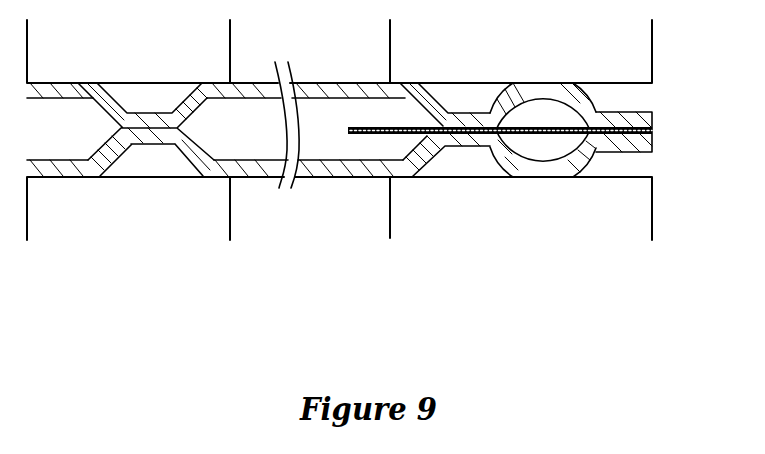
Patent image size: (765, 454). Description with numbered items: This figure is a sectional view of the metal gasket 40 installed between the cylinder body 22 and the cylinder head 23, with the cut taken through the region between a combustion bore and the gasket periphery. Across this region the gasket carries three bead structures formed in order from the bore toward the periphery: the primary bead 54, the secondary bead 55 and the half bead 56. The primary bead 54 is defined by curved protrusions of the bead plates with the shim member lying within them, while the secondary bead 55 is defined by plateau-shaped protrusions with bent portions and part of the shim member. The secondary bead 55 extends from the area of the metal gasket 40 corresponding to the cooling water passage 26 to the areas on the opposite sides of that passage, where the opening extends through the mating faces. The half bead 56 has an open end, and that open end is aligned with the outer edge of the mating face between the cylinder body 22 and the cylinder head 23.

The cylinder body 22 is at (652, 212).
The cylinder head 23 is at (645, 53).
The cooling water passage 26 is at (390, 233).
The metal gasket 40 is at (664, 113).
The primary bead 54 is at (545, 82).
The secondary bead 55 is at (337, 83).
The half bead 56 is at (67, 83).